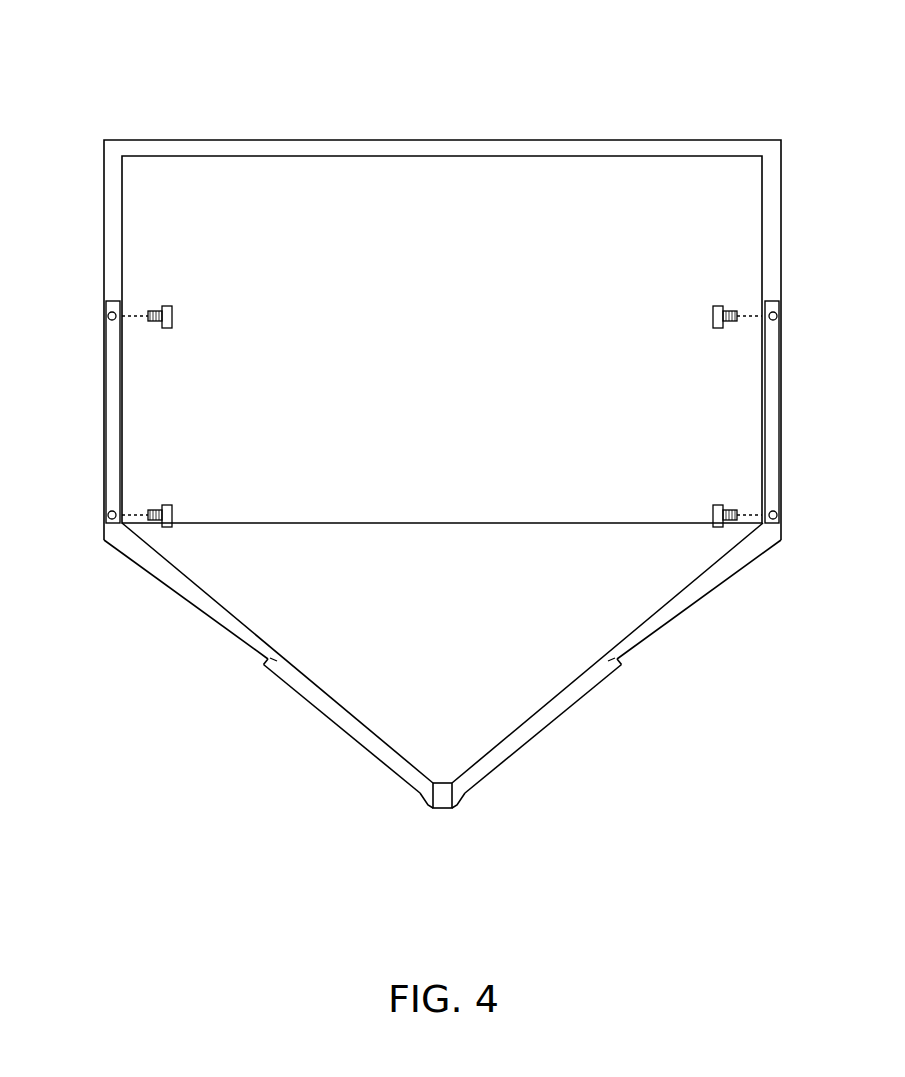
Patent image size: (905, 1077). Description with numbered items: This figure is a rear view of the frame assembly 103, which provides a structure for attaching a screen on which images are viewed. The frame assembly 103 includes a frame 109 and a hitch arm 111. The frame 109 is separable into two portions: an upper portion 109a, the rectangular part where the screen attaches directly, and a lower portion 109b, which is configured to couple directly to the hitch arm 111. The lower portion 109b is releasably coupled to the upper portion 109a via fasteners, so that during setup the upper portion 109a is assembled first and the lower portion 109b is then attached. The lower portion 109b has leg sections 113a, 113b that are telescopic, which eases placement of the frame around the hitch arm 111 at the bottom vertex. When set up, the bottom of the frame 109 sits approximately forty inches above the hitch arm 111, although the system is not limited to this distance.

The frame assembly 103 is at (148, 58).
The frame 109 is at (412, 551).
The upper portion 109a is at (104, 232).
The lower portion 109b is at (223, 627).
The hitch arm 111 is at (443, 808).
The leg section 113a is at (286, 661).
The leg section 113b is at (598, 662).